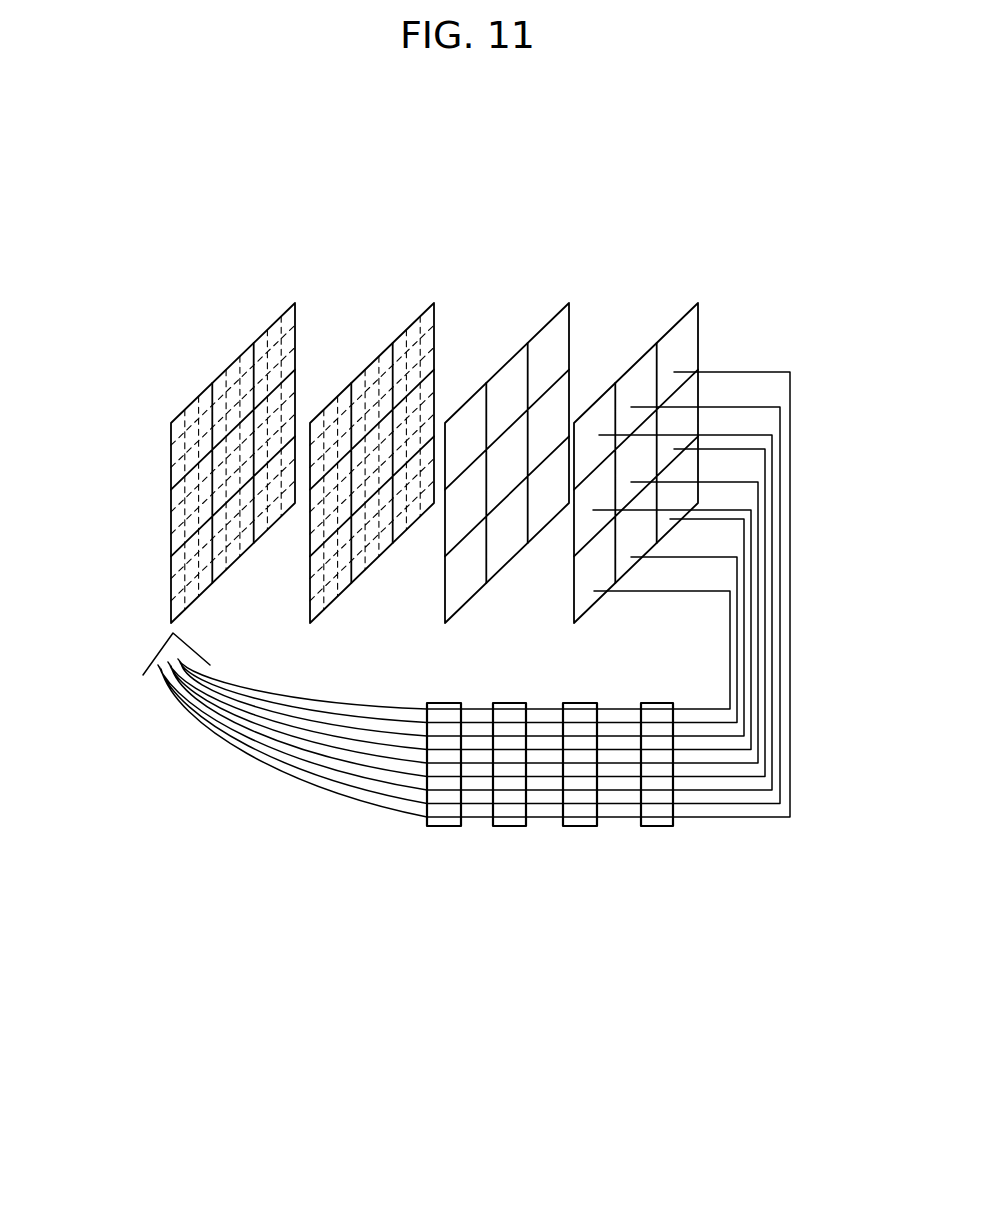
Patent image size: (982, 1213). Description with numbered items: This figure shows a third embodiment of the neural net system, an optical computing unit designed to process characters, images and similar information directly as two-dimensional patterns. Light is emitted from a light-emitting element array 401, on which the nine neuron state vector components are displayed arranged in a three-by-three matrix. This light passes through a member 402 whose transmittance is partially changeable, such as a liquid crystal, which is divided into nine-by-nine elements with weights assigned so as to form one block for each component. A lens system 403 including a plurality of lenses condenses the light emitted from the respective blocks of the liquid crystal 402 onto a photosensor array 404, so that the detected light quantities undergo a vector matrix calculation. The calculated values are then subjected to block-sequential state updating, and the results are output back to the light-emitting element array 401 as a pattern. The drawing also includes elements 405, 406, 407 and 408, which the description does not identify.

The light-emitting element array 401 is at (204, 357).
The member whose transmittance is partially changeable 402 is at (380, 328).
The lens system 403 is at (508, 308).
The photosensor array 404 is at (728, 302).
The driver circuit (first) 405 is at (665, 849).
The driver circuit (second) 406 is at (584, 850).
The driver circuit (third) 407 is at (502, 852).
The driver circuit (fourth) 408 is at (438, 848).